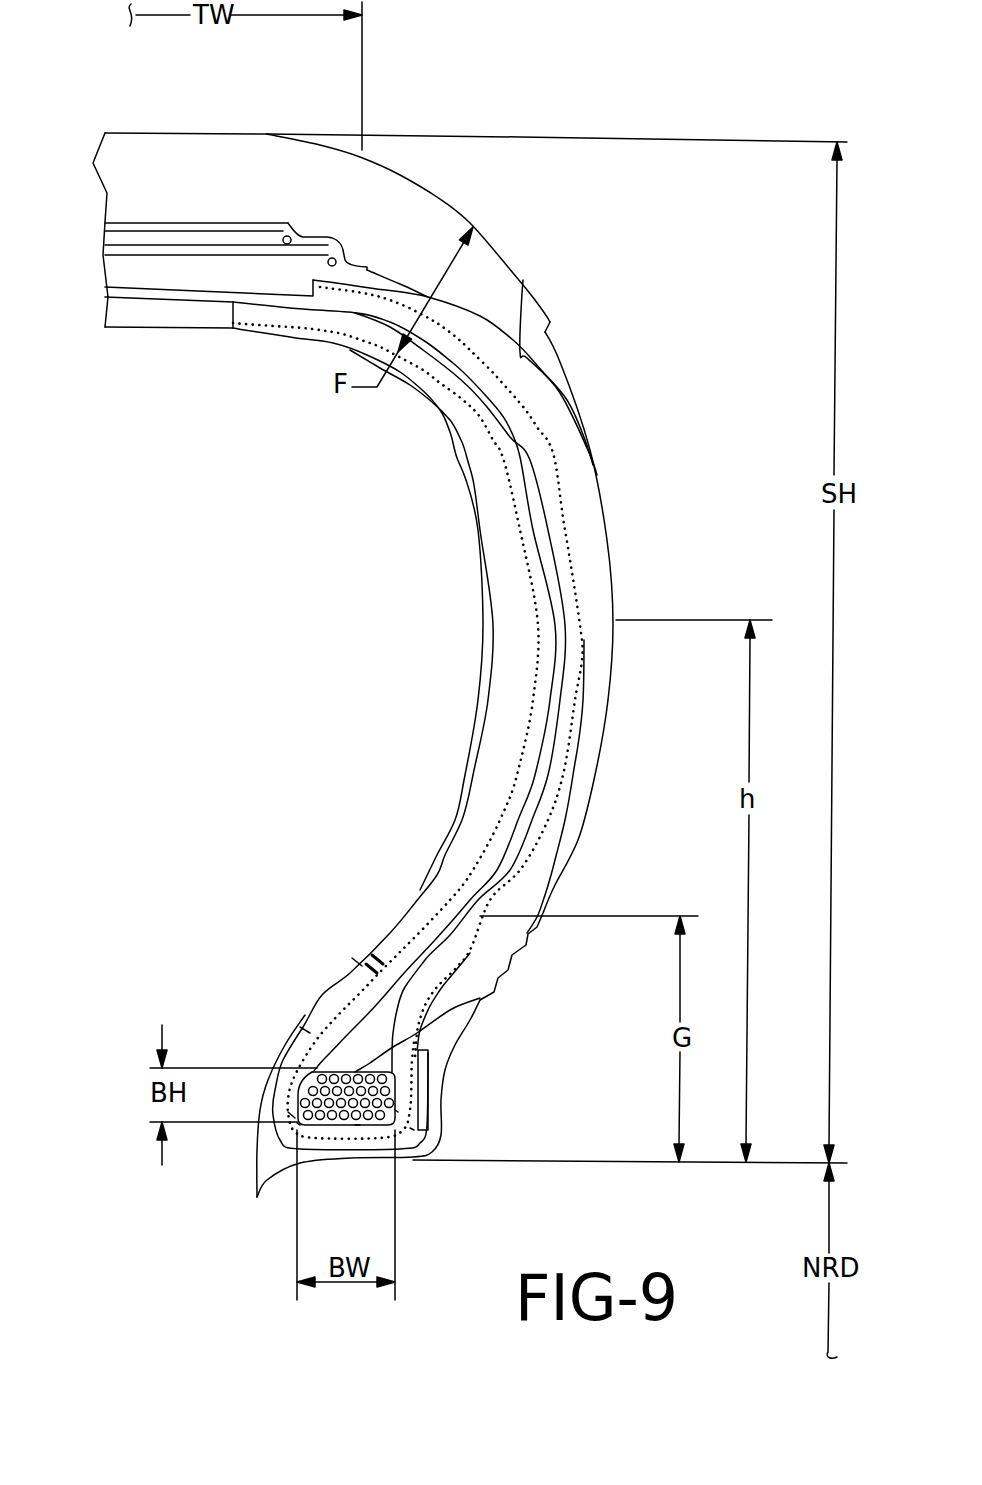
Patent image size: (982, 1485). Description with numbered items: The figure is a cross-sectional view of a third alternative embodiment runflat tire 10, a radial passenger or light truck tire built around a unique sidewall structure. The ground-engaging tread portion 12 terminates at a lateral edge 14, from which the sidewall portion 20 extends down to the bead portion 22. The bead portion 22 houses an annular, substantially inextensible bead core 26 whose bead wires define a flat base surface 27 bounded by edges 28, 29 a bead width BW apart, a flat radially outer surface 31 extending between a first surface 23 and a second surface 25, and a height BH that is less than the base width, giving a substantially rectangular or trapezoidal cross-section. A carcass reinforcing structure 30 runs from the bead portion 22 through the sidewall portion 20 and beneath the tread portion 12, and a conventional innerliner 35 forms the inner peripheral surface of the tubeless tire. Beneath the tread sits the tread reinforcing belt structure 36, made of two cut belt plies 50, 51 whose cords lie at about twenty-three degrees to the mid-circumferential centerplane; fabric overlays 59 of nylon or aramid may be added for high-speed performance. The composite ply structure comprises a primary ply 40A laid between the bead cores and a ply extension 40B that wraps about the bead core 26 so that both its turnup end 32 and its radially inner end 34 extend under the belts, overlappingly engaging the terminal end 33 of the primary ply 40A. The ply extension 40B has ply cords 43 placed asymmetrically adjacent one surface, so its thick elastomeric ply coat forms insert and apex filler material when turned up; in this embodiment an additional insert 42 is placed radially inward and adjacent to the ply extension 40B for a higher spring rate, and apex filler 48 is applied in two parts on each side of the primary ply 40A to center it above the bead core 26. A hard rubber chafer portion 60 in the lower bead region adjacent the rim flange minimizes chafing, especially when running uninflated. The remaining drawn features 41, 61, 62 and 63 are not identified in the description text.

The tire 10 is at (581, 262).
The tread portion 12 is at (128, 132).
The lateral edge 14 is at (376, 157).
The sidewall portion 20 is at (615, 533).
The bead portion 22 is at (373, 1012).
The first surface 23 is at (295, 1118).
The second surface 25 is at (398, 1112).
The bead core 26 is at (350, 1093).
The flat base surface 27 is at (358, 1125).
The edge 28 is at (297, 1123).
The edge 29 is at (412, 1128).
The carcass reinforcing structure 30 is at (128, 327).
The flat radially outer surface 31 is at (413, 1063).
The turnup end 32 is at (323, 294).
The terminal end 33 is at (353, 1070).
The end of ply extension 34 is at (243, 318).
The innerliner 35 is at (380, 953).
The tread reinforcing belt structure 36 is at (154, 212).
The primary ply 40A is at (557, 717).
The ply extension 40B is at (520, 773).
The ply interface layer 41 is at (535, 797).
The insert 42 is at (518, 682).
The ply cords 43 is at (500, 822).
The apex filler 48 is at (480, 998).
The belt ply 50 is at (265, 240).
The belt ply 51 is at (197, 253).
The fabric overlay 59 is at (205, 230).
The chafer portion 60 is at (503, 943).
The toe guard 61 is at (310, 1033).
The ply turn-up region 62 is at (360, 963).
The flipper 63 is at (428, 1058).